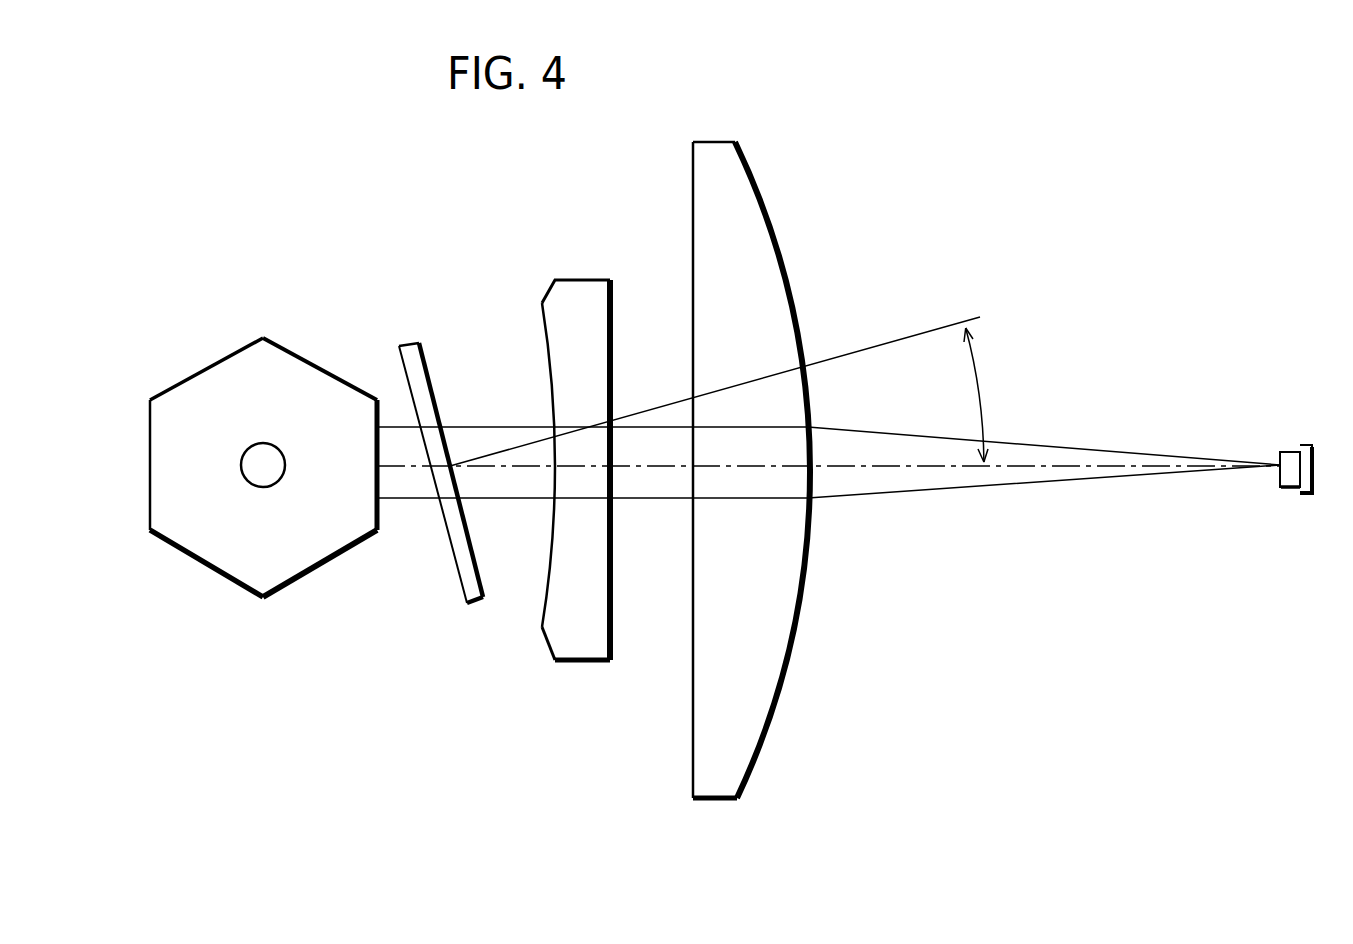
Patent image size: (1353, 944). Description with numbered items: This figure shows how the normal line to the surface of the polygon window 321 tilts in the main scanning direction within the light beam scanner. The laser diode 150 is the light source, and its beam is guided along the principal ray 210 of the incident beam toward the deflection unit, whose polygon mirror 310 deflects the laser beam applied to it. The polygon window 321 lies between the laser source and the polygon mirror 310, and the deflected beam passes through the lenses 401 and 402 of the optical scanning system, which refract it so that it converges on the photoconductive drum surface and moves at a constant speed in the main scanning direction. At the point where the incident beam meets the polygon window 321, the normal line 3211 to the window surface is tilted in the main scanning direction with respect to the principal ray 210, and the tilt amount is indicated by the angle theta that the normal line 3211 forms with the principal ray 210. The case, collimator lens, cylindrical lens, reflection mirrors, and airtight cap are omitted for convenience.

The polygon mirror 310 is at (263, 338).
The polygon window 321 is at (413, 343).
The optical scanning system lens 401 is at (580, 278).
The optical scanning system lens 402 is at (713, 142).
The normal line 3211 is at (905, 338).
The principal ray 210 is at (948, 467).
The laser diode 150 is at (1293, 452).